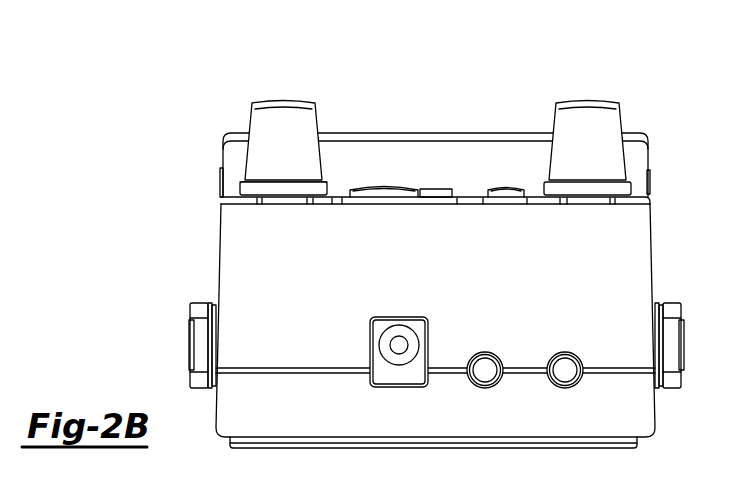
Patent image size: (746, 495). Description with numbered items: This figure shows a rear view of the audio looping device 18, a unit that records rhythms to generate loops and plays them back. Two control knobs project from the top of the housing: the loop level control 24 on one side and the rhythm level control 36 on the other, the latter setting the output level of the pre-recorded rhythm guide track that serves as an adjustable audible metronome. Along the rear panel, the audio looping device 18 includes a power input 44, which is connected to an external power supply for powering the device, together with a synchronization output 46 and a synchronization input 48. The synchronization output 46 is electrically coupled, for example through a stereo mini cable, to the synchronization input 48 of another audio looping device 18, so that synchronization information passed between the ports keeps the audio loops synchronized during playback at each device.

The audio looping device 18 is at (661, 47).
The loop level control 24 is at (284, 100).
The rhythm level control 36 is at (588, 100).
The power input 44 is at (399, 316).
The synchronization output 46 is at (487, 352).
The synchronization input 48 is at (567, 352).